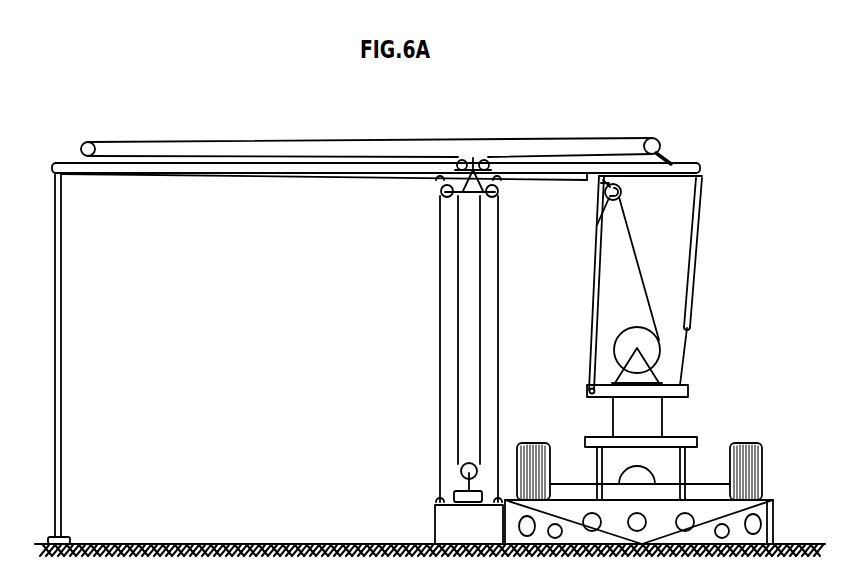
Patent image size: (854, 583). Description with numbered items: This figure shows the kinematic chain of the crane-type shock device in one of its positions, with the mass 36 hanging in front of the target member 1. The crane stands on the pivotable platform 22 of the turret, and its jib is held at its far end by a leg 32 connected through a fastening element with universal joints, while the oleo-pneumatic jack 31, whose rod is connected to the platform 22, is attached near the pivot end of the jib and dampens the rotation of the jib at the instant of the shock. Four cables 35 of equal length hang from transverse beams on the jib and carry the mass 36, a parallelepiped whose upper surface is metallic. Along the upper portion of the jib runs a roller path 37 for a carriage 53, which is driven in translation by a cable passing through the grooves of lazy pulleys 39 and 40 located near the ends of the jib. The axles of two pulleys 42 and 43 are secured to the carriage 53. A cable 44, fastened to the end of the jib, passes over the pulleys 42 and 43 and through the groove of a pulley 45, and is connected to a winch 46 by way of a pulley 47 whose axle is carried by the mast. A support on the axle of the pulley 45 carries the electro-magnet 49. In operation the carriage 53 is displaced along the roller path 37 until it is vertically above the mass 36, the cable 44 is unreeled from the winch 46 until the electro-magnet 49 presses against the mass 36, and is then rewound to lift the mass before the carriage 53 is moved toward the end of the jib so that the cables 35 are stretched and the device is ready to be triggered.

The target member 1 is at (769, 487).
The platform 22 is at (680, 392).
The oleo-pneumatic jack 31 is at (689, 280).
The leg 32 is at (62, 399).
The cables 35 is at (499, 326).
The mass 36 is at (445, 526).
The roller path 37 is at (73, 168).
The lazy pulley 39 is at (81, 142).
The lazy pulley 40 is at (661, 139).
The pulley 42 is at (439, 197).
The pulley 43 is at (499, 197).
The cable 44 is at (458, 328).
The pulley 45 is at (461, 469).
The winch 46 is at (651, 348).
The pulley 47 is at (621, 195).
The electro-magnet 49 is at (456, 497).
The carriage 53 is at (470, 158).